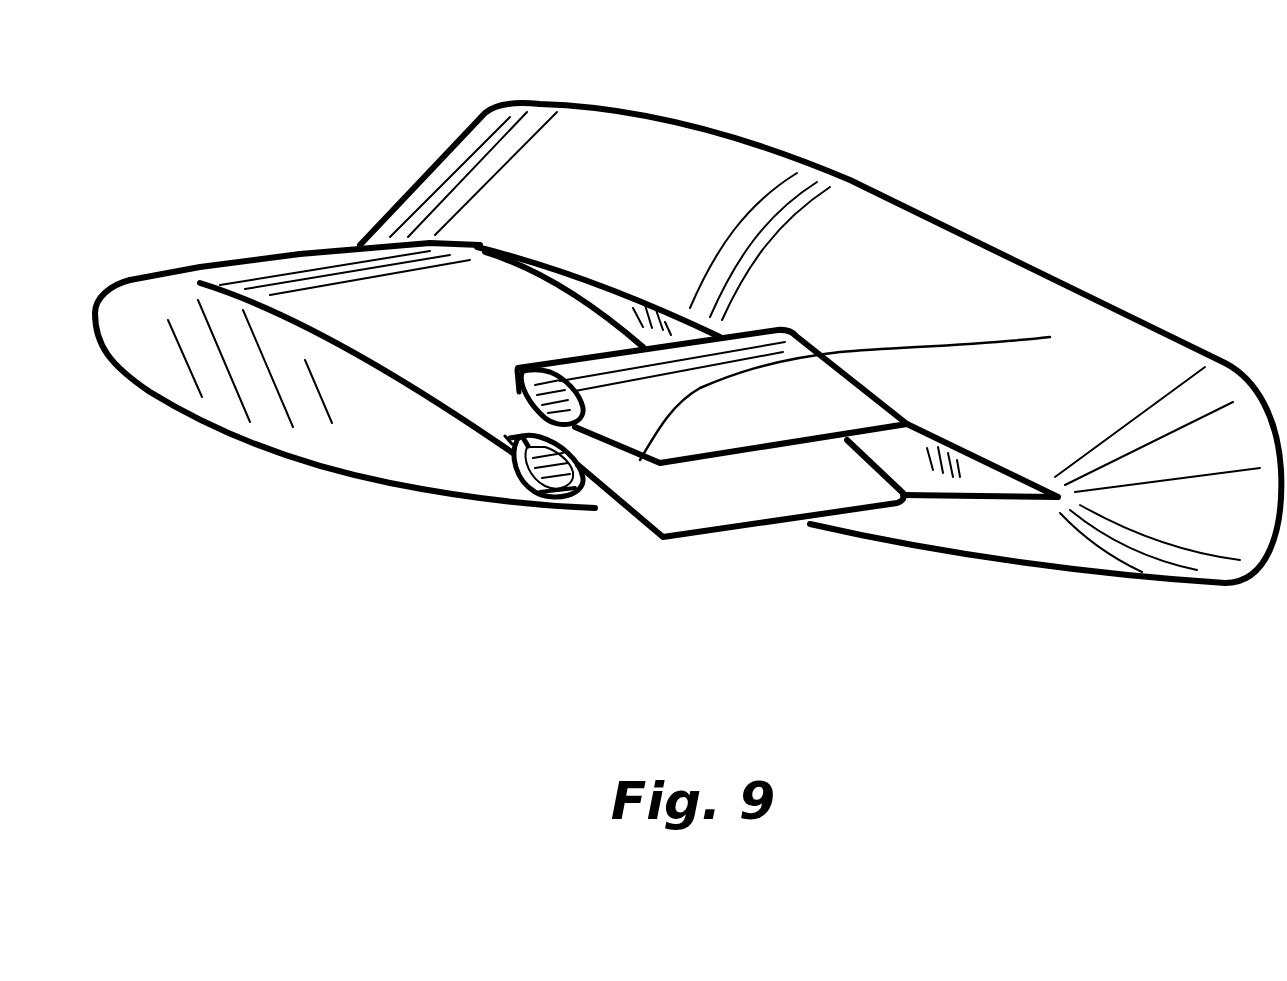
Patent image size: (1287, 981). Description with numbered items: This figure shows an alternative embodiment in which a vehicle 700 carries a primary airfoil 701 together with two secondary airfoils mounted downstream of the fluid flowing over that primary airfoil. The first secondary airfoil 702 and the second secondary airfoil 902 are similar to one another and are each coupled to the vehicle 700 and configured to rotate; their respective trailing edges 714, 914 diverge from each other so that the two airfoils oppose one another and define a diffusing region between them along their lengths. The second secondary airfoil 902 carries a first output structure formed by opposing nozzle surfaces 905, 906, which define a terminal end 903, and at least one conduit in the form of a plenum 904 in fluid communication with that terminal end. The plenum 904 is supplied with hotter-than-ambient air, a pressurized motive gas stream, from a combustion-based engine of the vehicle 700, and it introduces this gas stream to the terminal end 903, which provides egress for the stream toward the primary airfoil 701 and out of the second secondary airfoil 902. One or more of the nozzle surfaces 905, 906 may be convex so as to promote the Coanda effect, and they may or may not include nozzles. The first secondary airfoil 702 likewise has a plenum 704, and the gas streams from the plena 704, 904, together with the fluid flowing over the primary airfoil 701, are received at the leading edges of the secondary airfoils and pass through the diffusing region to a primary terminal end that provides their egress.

The vehicle 700 is at (813, 270).
The primary airfoil 701 is at (355, 421).
The first secondary airfoil 702 is at (731, 415).
The plenum 704 is at (553, 365).
The trailing edge 714 is at (1050, 337).
The second secondary airfoil 902 is at (603, 495).
The terminal end 903 is at (512, 444).
The plenum 904 is at (505, 495).
The nozzle surface 905 is at (523, 445).
The nozzle surface 906 is at (512, 488).
The trailing edge 914 is at (725, 500).